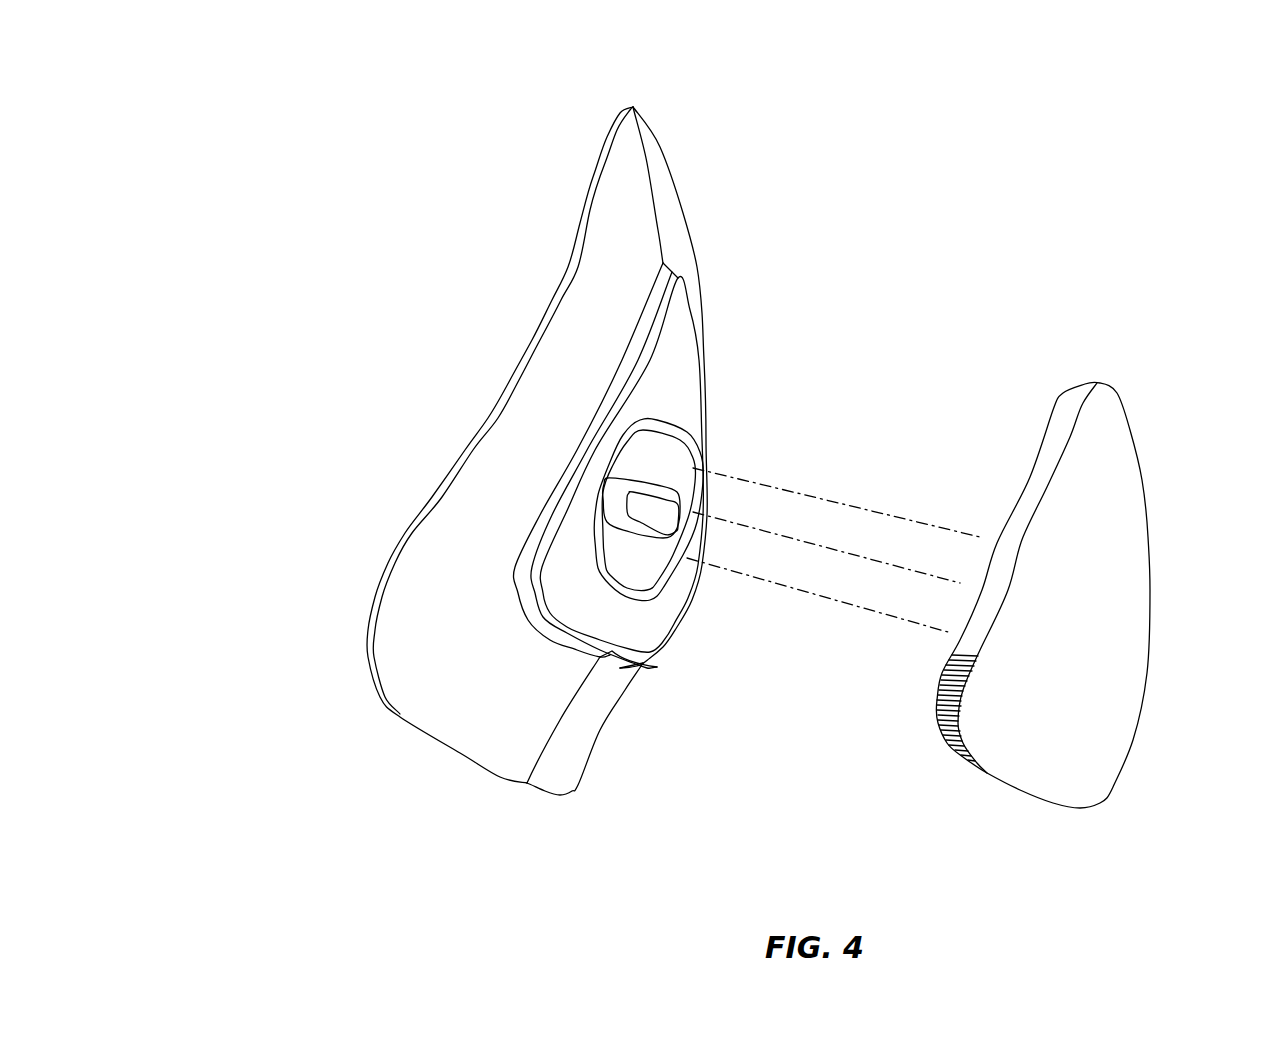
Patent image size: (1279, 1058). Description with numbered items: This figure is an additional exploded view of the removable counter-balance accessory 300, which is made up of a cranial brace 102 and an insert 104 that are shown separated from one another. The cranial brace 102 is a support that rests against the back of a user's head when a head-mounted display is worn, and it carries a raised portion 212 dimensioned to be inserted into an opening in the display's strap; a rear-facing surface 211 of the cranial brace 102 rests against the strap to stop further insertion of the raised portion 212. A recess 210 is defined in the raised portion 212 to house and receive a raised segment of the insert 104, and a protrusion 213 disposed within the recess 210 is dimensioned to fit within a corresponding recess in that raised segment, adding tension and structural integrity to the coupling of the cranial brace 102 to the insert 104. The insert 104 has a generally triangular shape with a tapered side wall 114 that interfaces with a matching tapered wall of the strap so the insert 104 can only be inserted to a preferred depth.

The removable counter-balance accessory 300 is at (232, 115).
The cranial brace 102 is at (393, 540).
The rear-facing surface 211 is at (660, 148).
The raised portion 212 is at (683, 310).
The recess 210 is at (653, 465).
The protrusion 213 is at (663, 515).
The insert 104 is at (1133, 440).
The tapered side wall 114 is at (1058, 450).